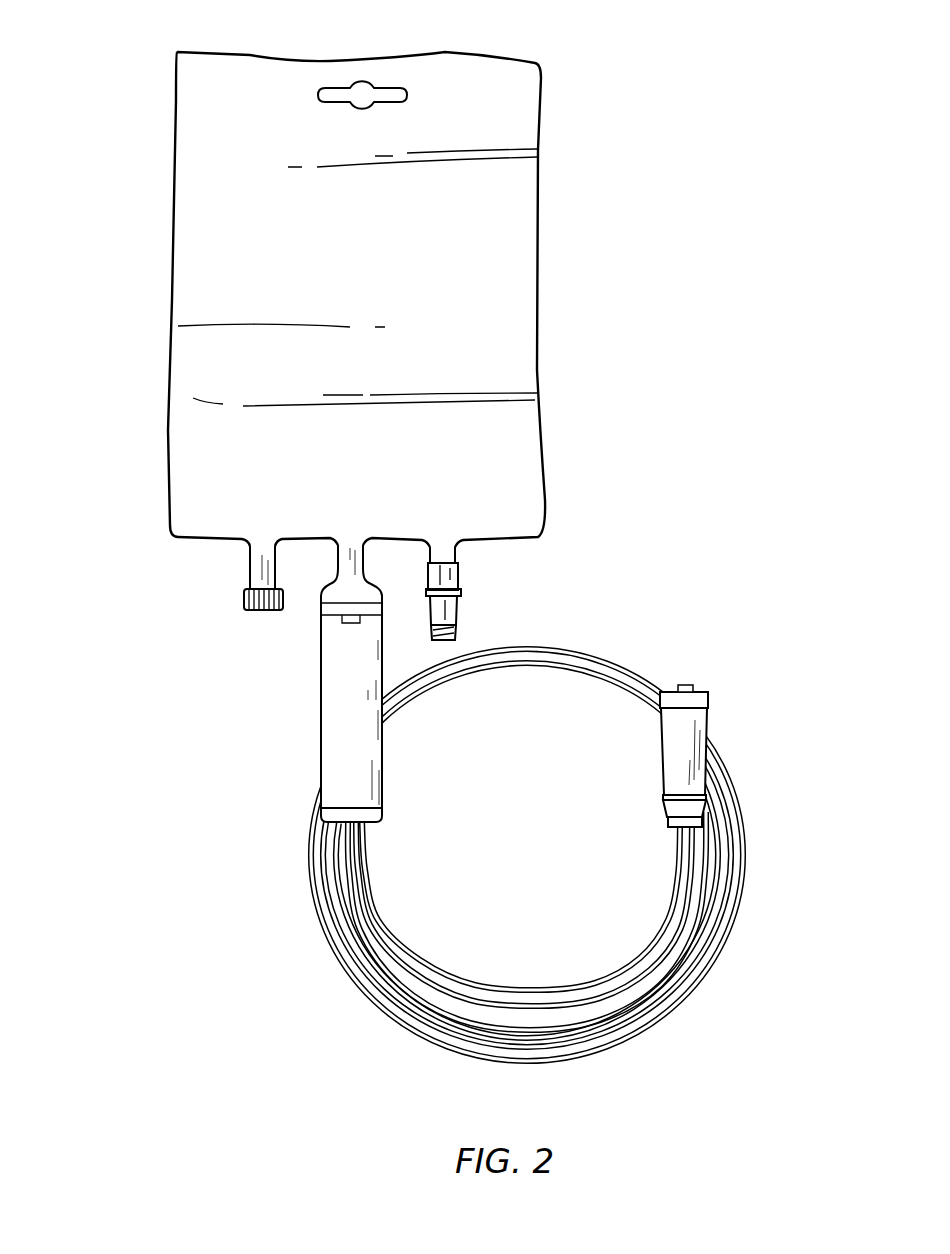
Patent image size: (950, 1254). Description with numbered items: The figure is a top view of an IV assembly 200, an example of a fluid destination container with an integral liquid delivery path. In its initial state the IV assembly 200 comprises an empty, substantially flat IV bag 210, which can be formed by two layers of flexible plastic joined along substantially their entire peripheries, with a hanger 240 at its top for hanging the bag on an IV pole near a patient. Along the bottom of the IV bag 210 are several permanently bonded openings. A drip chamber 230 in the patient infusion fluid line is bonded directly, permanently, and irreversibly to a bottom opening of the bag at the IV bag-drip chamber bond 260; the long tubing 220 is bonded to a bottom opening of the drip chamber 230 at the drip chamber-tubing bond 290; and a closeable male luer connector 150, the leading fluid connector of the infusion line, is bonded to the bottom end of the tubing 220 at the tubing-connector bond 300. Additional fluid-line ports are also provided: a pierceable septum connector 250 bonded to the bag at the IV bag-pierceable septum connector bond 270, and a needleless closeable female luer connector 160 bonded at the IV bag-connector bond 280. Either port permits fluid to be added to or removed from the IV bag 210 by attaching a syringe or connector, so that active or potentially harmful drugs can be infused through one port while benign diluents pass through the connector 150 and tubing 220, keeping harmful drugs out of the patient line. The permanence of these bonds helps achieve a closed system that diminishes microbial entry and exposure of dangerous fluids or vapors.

The IV assembly 200 is at (612, 493).
The IV bag 210 is at (513, 210).
The hanger 240 is at (365, 100).
The IV bag-pierceable septum connector bond 270 is at (246, 547).
The pierceable septum connector 250 is at (240, 602).
The IV bag-connector bond 280 is at (462, 548).
The needleless closeable female luer connector 160 is at (452, 598).
The IV bag-drip chamber bond 260 is at (372, 563).
The drip chamber 230 is at (328, 705).
The drip chamber-tubing bond 290 is at (368, 823).
The tubing 220 is at (325, 930).
The closeable male luer connector 150 is at (700, 718).
The tubing-connector bond 300 is at (665, 820).